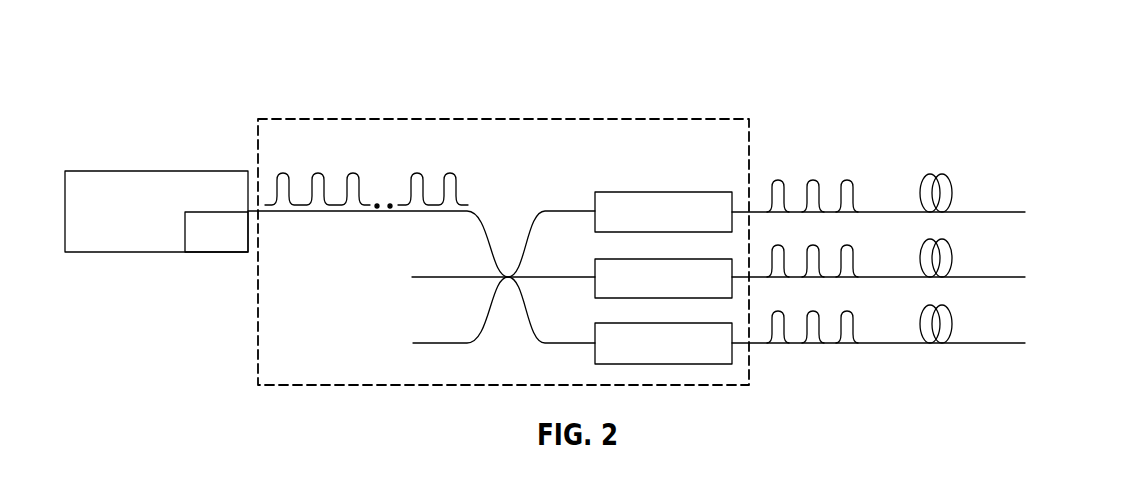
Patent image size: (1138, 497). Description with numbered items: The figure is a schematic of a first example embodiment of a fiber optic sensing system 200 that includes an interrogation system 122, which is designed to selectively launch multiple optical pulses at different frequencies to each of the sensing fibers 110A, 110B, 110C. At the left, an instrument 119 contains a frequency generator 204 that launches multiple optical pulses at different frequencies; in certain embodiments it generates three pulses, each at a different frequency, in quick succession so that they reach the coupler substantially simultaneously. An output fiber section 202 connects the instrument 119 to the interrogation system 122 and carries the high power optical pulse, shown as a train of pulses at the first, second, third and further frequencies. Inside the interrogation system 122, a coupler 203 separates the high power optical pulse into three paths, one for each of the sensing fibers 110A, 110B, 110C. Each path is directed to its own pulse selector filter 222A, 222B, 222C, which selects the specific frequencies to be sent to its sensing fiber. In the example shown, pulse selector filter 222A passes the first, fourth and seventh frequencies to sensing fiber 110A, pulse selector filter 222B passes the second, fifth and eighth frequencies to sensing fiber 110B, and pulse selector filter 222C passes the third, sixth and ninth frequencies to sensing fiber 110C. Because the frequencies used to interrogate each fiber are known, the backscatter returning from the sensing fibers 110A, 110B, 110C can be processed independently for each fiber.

The fiber optic sensing system 200 is at (742, 44).
The instrument 119 is at (177, 224).
The frequency generator 204 is at (237, 247).
The interrogation system 122 is at (735, 112).
The output fiber section 202 is at (360, 213).
The coupler 203 is at (513, 301).
The pulse selector filter 222A is at (693, 224).
The pulse selector filter 222B is at (693, 291).
The pulse selector filter 222C is at (693, 356).
The sensing fiber 110A is at (1008, 212).
The sensing fiber 110B is at (1008, 277).
The sensing fiber 110C is at (1008, 343).